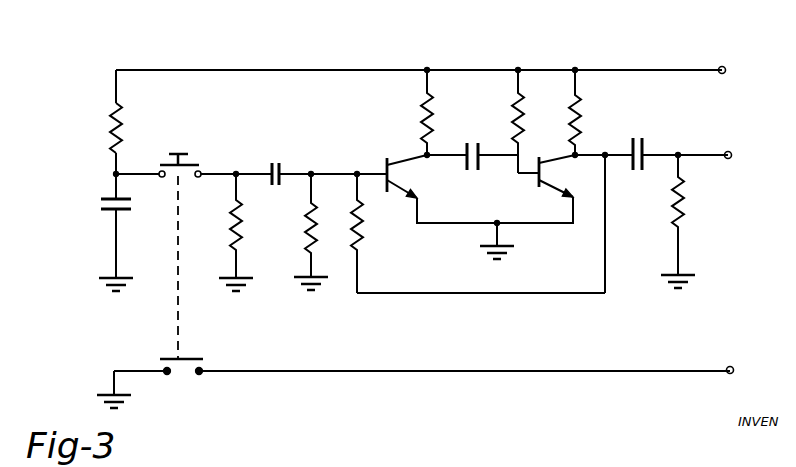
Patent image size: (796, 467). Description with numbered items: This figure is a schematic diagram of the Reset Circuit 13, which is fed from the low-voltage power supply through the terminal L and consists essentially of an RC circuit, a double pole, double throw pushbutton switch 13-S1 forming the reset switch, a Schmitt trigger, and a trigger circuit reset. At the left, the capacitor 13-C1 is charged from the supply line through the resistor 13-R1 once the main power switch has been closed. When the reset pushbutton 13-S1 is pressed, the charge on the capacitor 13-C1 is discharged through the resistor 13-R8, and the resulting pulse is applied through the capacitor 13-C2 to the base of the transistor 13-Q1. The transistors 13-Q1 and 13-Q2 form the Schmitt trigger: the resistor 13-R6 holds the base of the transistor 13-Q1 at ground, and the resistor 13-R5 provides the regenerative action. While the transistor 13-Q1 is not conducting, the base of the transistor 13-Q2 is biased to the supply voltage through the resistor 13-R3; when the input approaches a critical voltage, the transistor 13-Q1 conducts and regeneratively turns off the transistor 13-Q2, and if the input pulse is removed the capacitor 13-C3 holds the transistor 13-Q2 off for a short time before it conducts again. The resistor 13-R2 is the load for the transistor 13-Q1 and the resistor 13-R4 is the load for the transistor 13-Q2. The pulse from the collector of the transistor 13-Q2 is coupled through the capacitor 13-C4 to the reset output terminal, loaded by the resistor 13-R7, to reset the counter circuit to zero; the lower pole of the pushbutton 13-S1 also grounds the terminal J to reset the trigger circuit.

The Reset Circuit 13 is at (140, 40).
The resistor 13-R1 is at (107, 123).
The pushbutton switch 13-S1 is at (176, 254).
The capacitor 13-C1 is at (117, 240).
The capacitor 13-C2 is at (268, 169).
The resistor 13-R8 is at (236, 232).
The resistor 13-R6 is at (314, 232).
The resistor 13-R5 is at (360, 233).
The transistor 13-Q1 is at (399, 161).
The resistor 13-R2 is at (420, 112).
The capacitor 13-C3 is at (467, 155).
The resistor 13-R3 is at (516, 121).
The resistor 13-R4 is at (577, 112).
The transistor 13-Q2 is at (543, 183).
The capacitor 13-C4 is at (643, 155).
The resistor 13-R7 is at (684, 221).